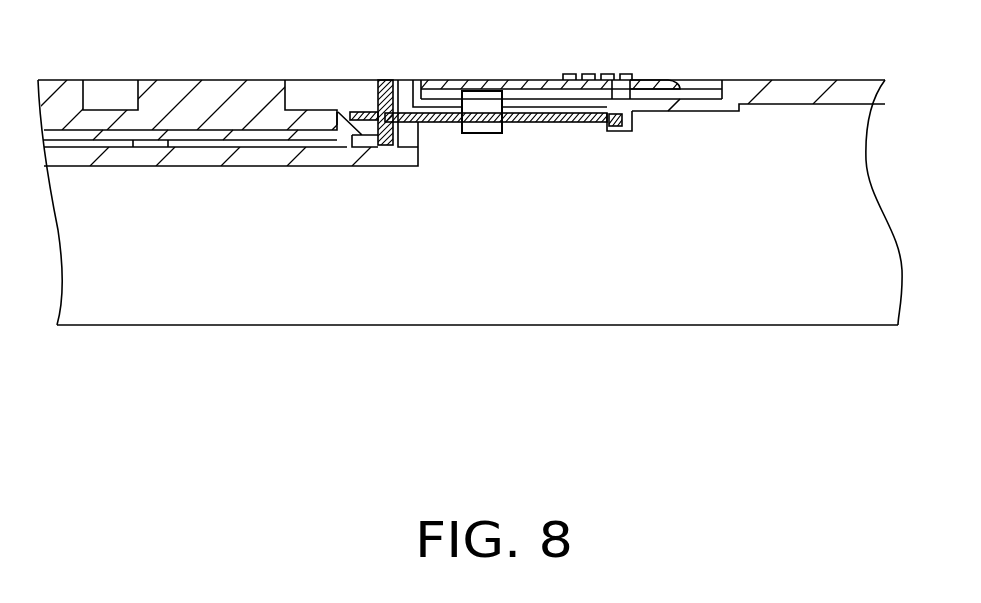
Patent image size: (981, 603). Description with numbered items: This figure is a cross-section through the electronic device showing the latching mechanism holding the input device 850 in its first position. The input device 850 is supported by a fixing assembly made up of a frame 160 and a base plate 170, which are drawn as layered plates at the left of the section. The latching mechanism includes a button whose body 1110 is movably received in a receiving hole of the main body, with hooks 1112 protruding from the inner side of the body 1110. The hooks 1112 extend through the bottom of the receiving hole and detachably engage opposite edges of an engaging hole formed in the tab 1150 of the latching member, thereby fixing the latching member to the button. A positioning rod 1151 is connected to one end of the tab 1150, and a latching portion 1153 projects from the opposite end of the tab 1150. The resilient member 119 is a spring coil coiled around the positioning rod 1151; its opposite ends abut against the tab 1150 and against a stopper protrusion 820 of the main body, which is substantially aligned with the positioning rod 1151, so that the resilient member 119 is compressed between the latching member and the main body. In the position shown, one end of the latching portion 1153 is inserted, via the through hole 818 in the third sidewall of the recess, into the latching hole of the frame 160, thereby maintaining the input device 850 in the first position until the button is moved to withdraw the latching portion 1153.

The input device 850 is at (212, 90).
The frame 160 is at (335, 204).
The through hole 818 is at (414, 100).
The body 1110 is at (513, 90).
The resilient member 119 is at (612, 122).
The stopper protrusion 820 is at (632, 131).
The base plate 170 is at (345, 132).
The latching portion 1153 is at (390, 147).
The tab 1150 is at (443, 137).
The hooks 1112 is at (484, 112).
The positioning rod 1151 is at (557, 127).